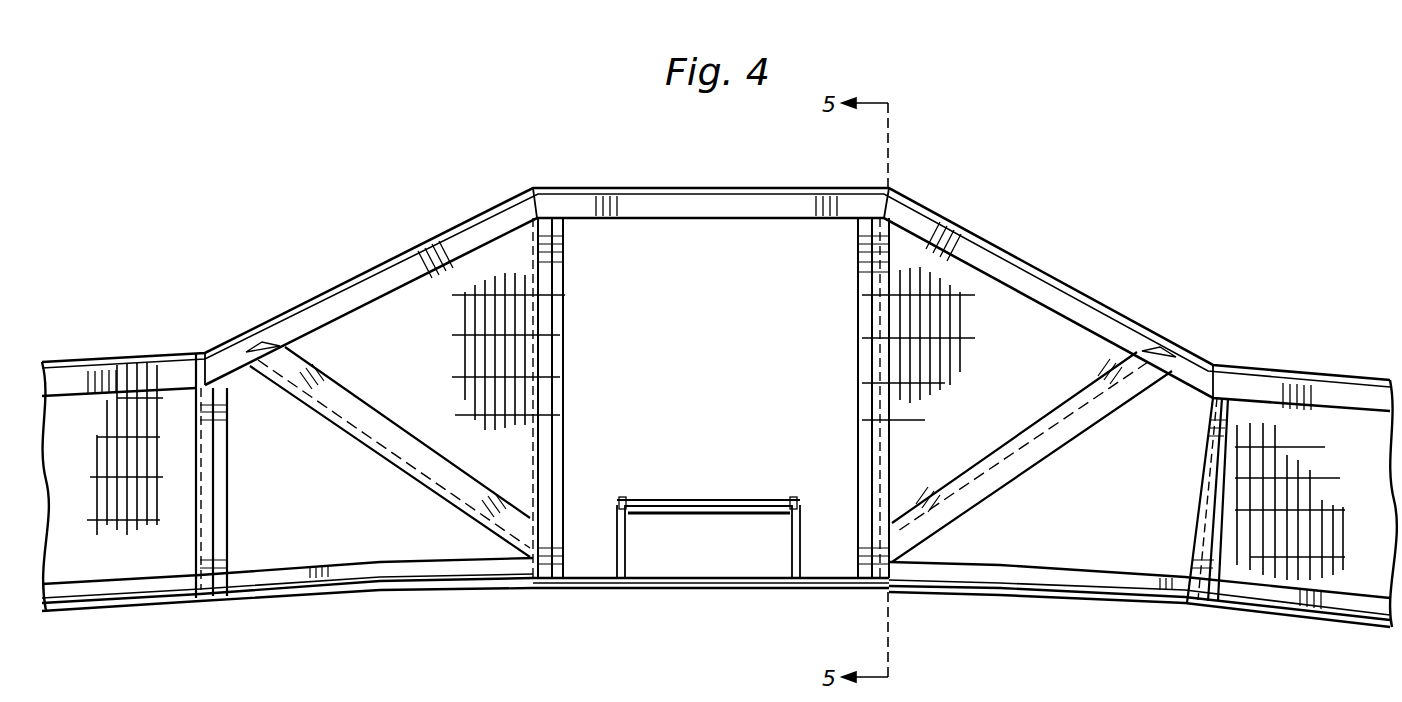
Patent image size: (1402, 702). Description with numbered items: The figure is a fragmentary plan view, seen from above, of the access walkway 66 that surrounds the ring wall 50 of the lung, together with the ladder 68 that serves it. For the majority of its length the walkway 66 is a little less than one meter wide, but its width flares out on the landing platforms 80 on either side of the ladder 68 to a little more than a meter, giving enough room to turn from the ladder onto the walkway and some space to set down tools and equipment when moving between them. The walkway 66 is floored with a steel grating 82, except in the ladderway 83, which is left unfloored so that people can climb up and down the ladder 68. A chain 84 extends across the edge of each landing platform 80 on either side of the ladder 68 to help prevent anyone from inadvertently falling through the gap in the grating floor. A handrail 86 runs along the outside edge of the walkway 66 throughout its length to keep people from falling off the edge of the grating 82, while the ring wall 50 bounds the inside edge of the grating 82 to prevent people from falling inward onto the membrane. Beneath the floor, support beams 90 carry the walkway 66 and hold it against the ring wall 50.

The ring wall 50 is at (847, 590).
The walkway 66 is at (366, 320).
The ladder 68 is at (764, 470).
The landing platform 80 is at (401, 222).
The steel grating 82 is at (116, 518).
The ladderway 83 is at (718, 237).
The chain 84 is at (563, 259).
The handrail 86 is at (301, 306).
The support beam 90 is at (325, 415).